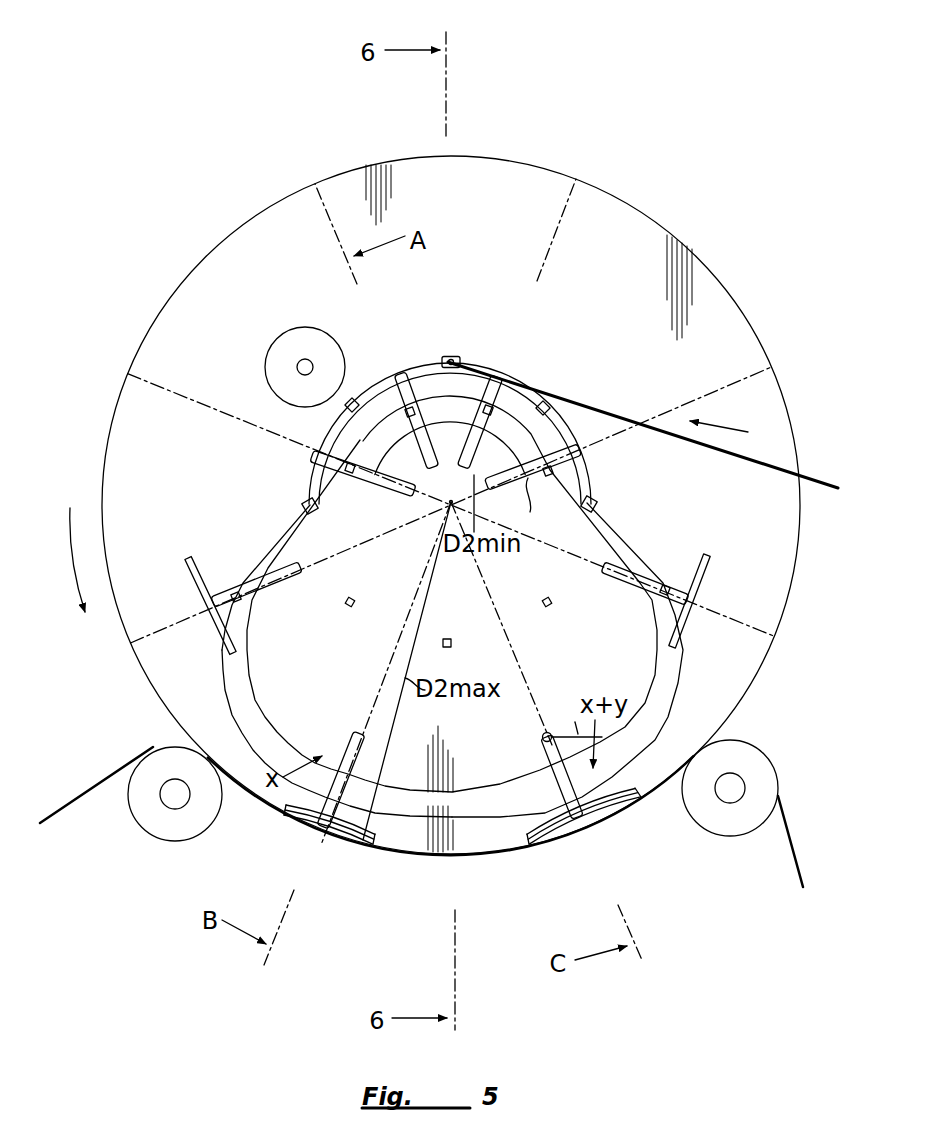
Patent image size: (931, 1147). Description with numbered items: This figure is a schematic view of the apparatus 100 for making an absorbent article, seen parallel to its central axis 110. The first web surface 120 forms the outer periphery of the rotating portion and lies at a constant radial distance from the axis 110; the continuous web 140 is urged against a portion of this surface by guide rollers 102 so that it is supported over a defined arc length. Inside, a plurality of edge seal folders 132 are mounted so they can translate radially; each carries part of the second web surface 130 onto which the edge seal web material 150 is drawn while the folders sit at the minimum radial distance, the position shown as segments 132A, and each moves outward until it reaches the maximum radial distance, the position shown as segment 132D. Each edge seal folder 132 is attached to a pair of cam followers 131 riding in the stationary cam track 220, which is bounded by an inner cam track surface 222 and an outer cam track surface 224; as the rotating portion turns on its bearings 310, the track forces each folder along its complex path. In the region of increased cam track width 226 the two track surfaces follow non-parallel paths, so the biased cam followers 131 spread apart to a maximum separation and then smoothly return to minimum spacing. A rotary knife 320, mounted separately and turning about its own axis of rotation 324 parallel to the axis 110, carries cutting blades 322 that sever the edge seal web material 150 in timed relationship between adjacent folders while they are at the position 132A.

The apparatus 100 is at (678, 100).
The guide rollers 102 is at (205, 816).
The axis 110 is at (445, 505).
The first web surface 120 is at (717, 279).
The second web surface 130 is at (500, 357).
The cam followers 131 is at (535, 508).
The edge seal folder 132 is at (193, 567).
The edge seal folder segment at minimum radial distance 132A is at (460, 356).
The edge seal folder segment at maximum radial distance 132D is at (360, 842).
The continuous web 140 is at (83, 800).
The edge seal web material 150 is at (618, 418).
The cam track 220 is at (240, 665).
The inner cam track surface 222 is at (270, 710).
The outer cam track surface 224 is at (233, 700).
The region of increased cam track width 226 is at (530, 782).
The bearings 310 is at (350, 400).
The rotary knife 320 is at (306, 350).
The cutting blades 322 is at (283, 335).
The axis of rotation 324 is at (297, 369).